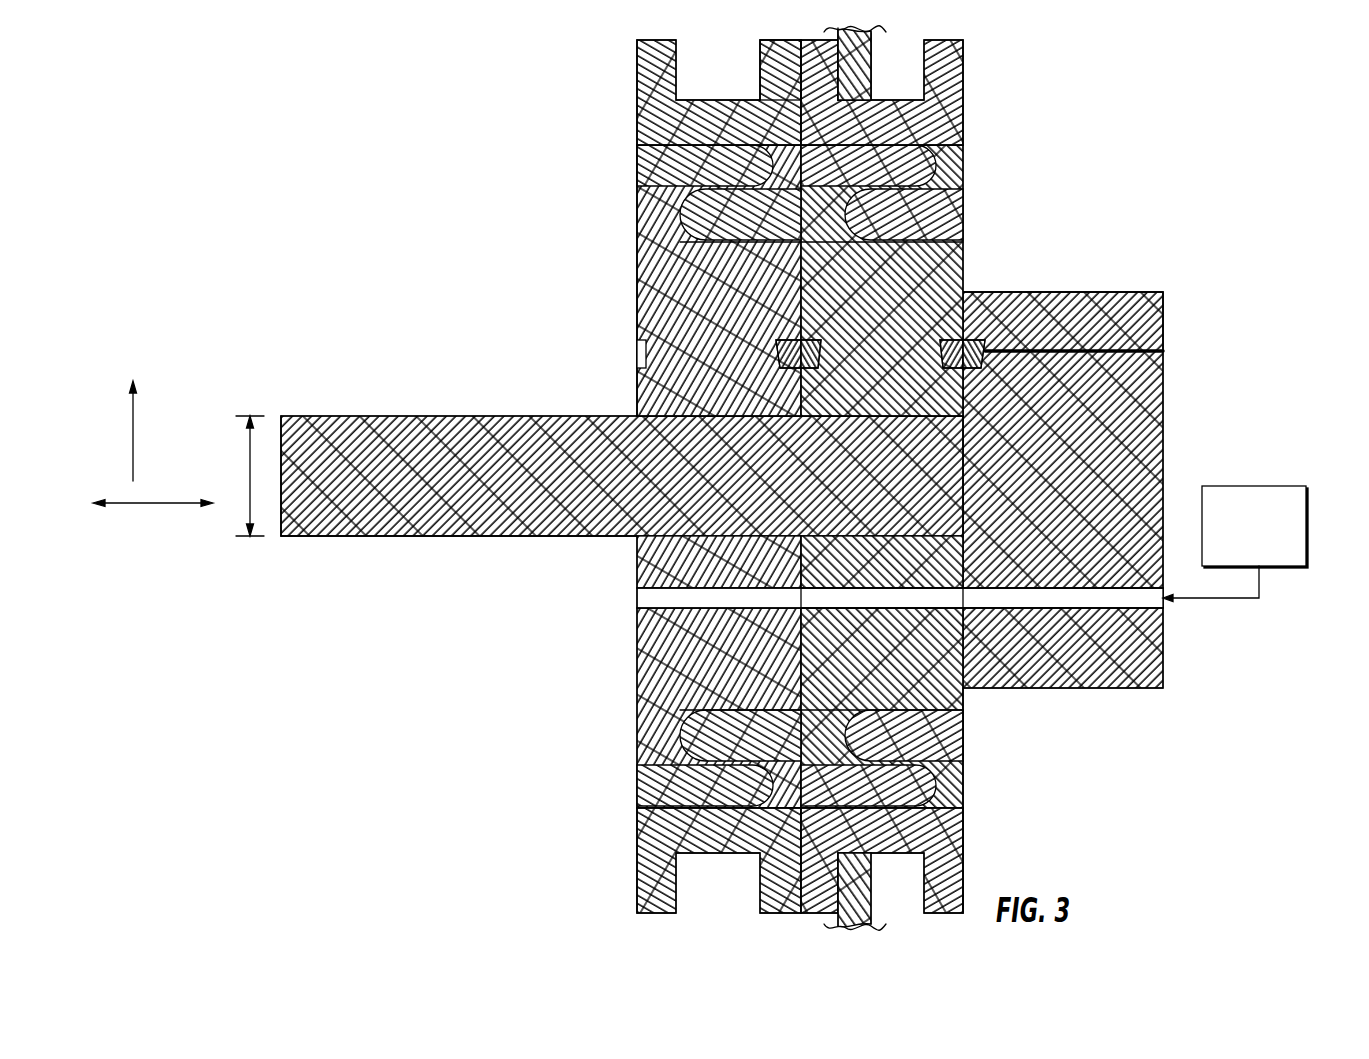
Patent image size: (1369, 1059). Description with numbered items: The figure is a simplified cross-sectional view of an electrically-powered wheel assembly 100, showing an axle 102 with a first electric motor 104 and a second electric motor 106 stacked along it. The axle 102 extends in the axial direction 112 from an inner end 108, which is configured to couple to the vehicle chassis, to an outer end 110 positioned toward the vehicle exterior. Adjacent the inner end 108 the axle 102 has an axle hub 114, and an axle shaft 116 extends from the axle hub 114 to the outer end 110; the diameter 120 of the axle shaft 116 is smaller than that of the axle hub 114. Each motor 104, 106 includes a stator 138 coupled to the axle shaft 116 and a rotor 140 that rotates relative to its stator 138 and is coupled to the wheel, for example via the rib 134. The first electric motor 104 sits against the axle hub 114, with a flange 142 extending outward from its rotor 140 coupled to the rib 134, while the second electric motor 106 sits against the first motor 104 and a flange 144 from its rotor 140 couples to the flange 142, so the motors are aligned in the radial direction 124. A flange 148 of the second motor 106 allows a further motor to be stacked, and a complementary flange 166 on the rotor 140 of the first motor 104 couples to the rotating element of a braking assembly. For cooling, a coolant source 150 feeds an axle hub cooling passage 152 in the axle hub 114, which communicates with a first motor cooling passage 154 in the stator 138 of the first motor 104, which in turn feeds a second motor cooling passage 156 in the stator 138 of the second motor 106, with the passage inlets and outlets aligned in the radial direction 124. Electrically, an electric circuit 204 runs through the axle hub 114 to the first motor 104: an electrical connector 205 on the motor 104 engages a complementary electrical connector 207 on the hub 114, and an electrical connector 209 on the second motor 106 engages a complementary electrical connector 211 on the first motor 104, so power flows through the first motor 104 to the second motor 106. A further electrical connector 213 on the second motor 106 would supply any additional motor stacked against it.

The electrically-powered wheel assembly 100 is at (235, 146).
The axle 102 is at (494, 390).
The first electric motor 104 is at (987, 734).
The second electric motor 106 is at (565, 236).
The inner end 108 is at (1157, 368).
The outer end 110 is at (270, 512).
The axial direction 112 is at (162, 497).
The axle hub 114 is at (1068, 283).
The axle shaft 116 is at (490, 529).
The diameter of the axle shaft 120 is at (240, 462).
The radial direction 124 is at (123, 440).
The rib 134 is at (863, 892).
The stator 138 is at (955, 247).
The rotor 140 is at (955, 802).
The flange of the first motor 142 is at (808, 30).
The flange of the second motor 144 is at (752, 62).
The flange of the second motor 148 is at (629, 60).
The coolant source 150 is at (1273, 560).
The axle hub cooling passage 152 is at (1058, 600).
The first motor cooling passage 154 is at (911, 588).
The second motor cooling passage 156 is at (610, 592).
The complementary flange 166 is at (955, 62).
The electric circuit 204 is at (1125, 343).
The electrical connector on the first motor 205 is at (937, 330).
The electrical connector on the hub 207 is at (958, 330).
The electrical connector on the second motor 209 is at (775, 332).
The electrical connector on the first motor 211 is at (803, 332).
The electrical connector on the second motor 213 is at (629, 342).